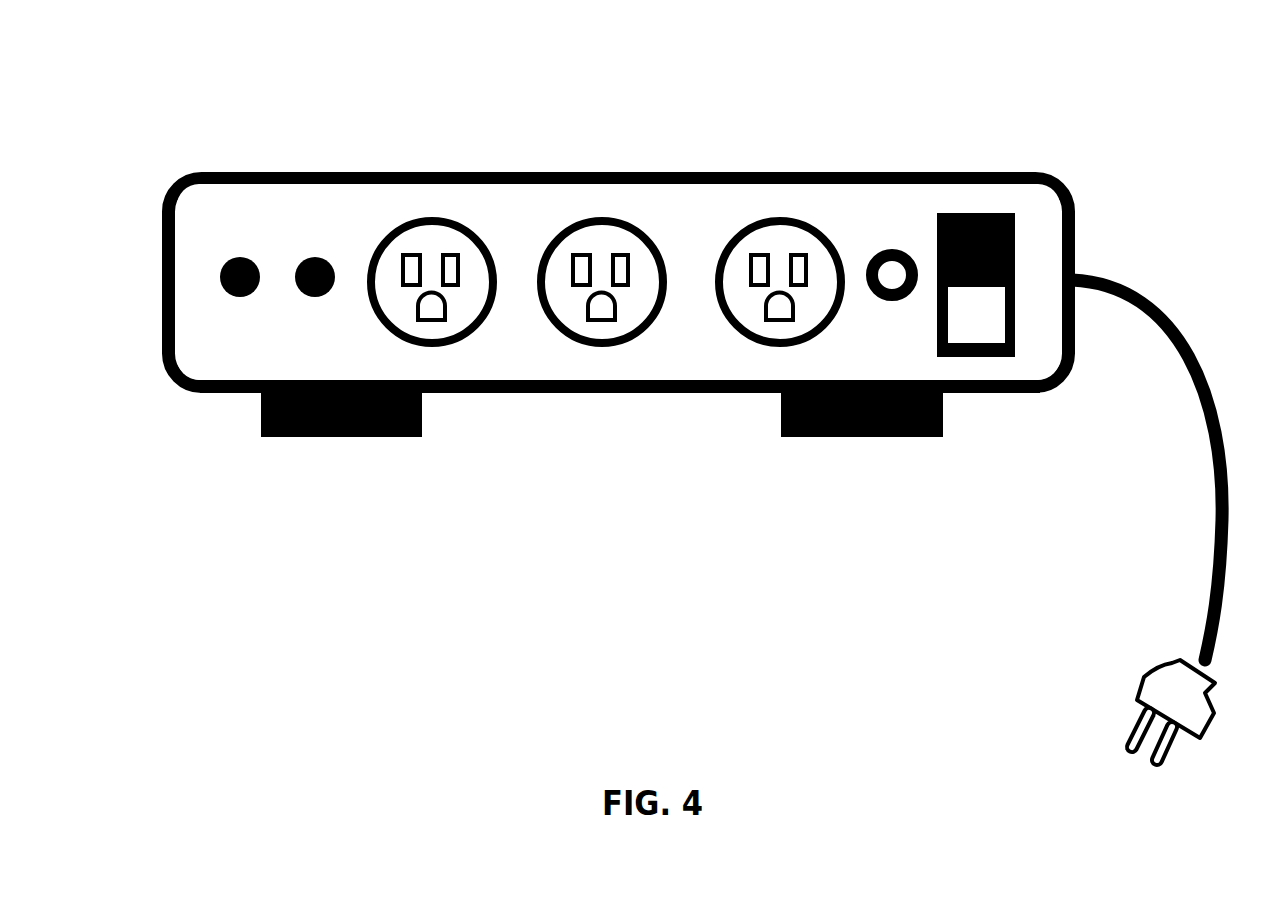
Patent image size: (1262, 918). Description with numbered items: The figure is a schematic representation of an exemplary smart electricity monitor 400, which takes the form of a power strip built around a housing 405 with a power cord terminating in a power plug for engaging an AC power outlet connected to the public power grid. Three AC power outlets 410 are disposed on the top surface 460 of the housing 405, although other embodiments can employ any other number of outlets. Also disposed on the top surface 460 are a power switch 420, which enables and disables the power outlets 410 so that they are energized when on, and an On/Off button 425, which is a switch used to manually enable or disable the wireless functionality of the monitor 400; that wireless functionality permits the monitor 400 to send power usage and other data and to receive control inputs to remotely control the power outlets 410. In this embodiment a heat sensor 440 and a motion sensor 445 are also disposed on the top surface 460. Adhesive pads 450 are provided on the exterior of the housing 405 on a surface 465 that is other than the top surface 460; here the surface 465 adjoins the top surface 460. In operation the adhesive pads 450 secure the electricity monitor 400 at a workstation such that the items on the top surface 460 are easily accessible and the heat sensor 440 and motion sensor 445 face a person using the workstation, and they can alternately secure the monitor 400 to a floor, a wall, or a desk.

The smart electricity monitor 400 is at (232, 93).
The housing 405 is at (298, 170).
The AC power outlets 410 is at (622, 220).
The power switch 420 is at (973, 213).
The On/Off button 425 is at (893, 250).
The heat sensor 440 is at (240, 255).
The motion sensor 445 is at (307, 298).
The adhesive pads 450 is at (793, 437).
The top surface 460 is at (503, 213).
The surface 465 is at (628, 393).